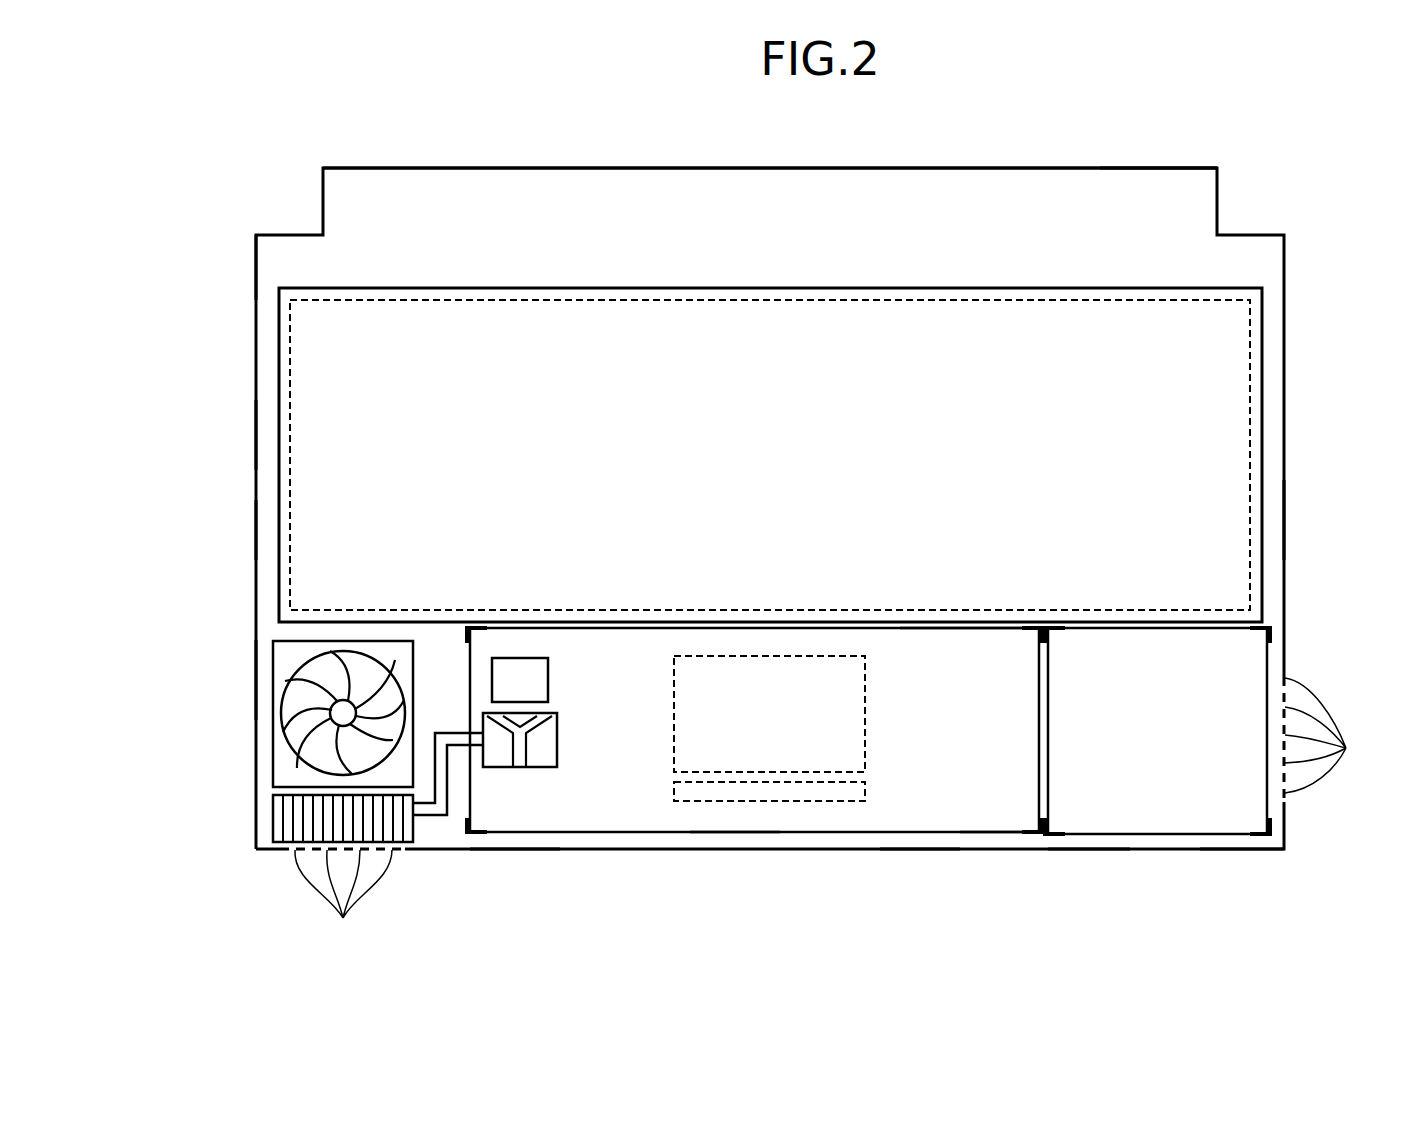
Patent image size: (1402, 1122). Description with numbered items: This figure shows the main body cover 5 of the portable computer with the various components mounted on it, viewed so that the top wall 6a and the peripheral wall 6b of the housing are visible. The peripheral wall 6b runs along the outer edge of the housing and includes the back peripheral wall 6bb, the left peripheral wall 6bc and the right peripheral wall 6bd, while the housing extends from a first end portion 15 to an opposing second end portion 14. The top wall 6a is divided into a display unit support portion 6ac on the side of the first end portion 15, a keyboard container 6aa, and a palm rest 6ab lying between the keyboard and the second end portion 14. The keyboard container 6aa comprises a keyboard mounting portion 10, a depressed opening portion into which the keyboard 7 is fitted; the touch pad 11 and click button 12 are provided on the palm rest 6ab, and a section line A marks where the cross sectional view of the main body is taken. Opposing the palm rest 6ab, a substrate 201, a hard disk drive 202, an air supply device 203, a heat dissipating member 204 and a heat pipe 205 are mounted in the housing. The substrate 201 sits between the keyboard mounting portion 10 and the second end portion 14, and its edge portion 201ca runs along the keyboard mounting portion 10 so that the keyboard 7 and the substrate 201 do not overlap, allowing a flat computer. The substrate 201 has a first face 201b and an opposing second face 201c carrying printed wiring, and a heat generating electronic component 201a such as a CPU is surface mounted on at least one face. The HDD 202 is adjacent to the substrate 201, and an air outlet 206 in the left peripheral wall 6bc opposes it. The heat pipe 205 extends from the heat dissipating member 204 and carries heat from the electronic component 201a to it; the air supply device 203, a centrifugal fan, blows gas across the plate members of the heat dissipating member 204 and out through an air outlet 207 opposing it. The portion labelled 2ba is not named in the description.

The main body cover 5 is at (820, 150).
The line A- A is at (770, 923).
The first end portion 15 is at (649, 167).
The back peripheral wall 6bb is at (1156, 167).
The display unit support portion 6ac is at (255, 258).
The keyboard container 6aa is at (255, 448).
The right peripheral wall 6bd is at (255, 516).
The palm rest 6ab is at (255, 684).
The left peripheral wall 6bc is at (1285, 522).
The peripheral wall 6b is at (1090, 850).
The top wall 6a is at (1242, 850).
The second end portion 14 is at (921, 850).
The bottom frame portion 2ba is at (506, 850).
The keyboard mounting portion 10 is at (278, 486).
The keyboard 7 is at (1250, 460).
The substrate 201 is at (857, 834).
The edge portion 201ca is at (962, 627).
The second face 201c is at (992, 834).
The first face 201b is at (721, 818).
The electronic component 201a is at (548, 682).
The touch pad 11 is at (674, 725).
The click button 12 is at (692, 802).
The hard disk drive 202 is at (1167, 814).
The air outlet 206 is at (1346, 748).
The air supply device 203 is at (272, 767).
The heat dissipating member 204 is at (272, 821).
The heat pipe 205 is at (429, 848).
The air outlet 207 is at (343, 920).